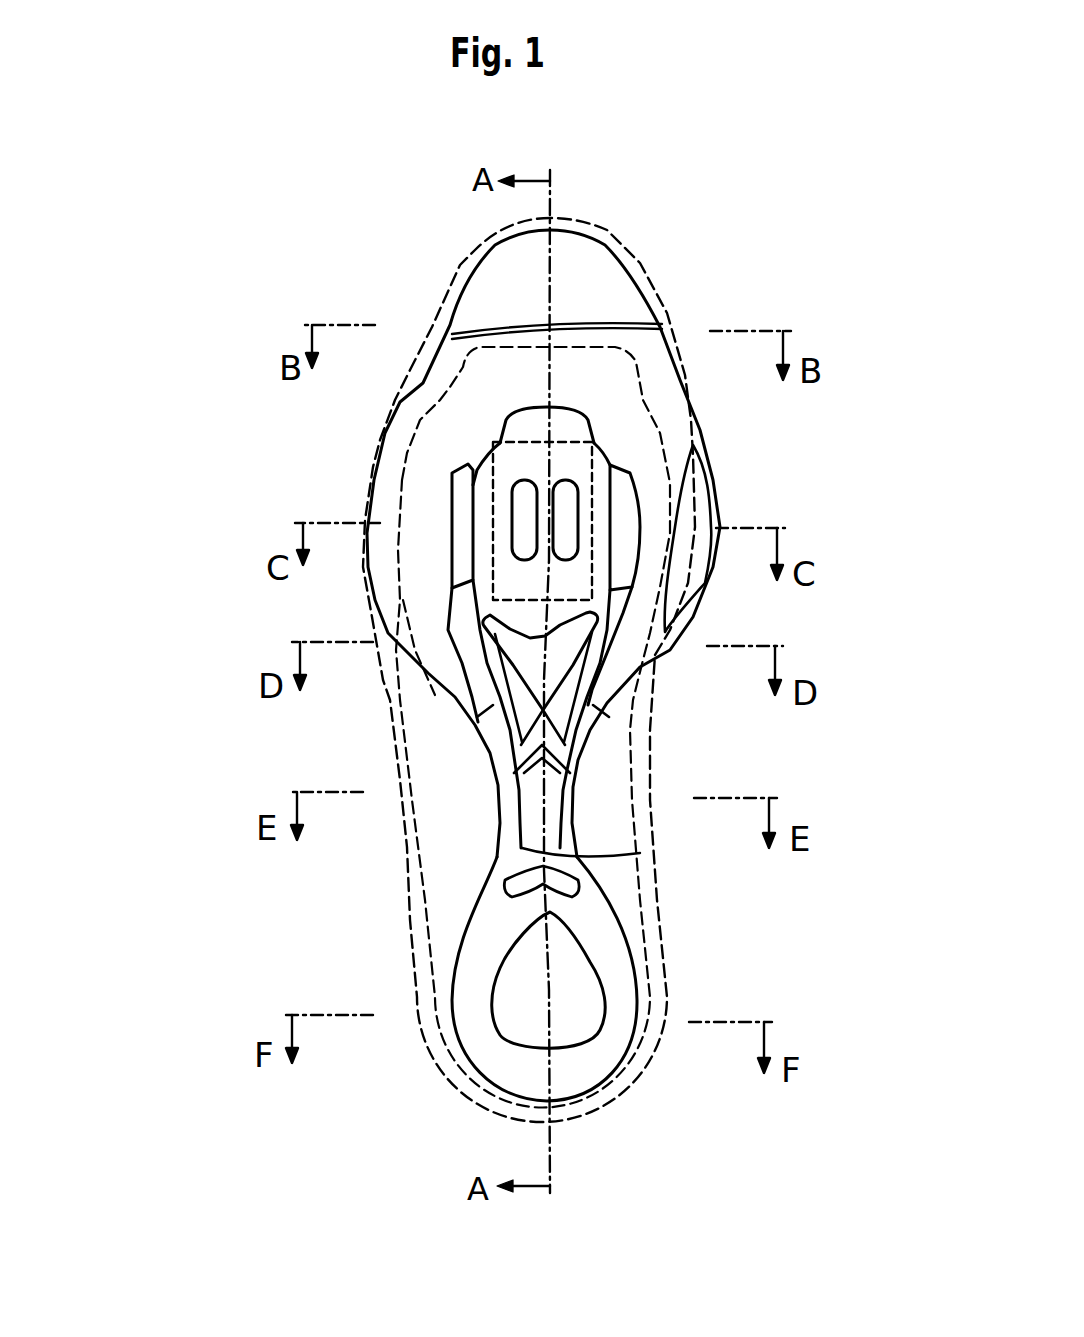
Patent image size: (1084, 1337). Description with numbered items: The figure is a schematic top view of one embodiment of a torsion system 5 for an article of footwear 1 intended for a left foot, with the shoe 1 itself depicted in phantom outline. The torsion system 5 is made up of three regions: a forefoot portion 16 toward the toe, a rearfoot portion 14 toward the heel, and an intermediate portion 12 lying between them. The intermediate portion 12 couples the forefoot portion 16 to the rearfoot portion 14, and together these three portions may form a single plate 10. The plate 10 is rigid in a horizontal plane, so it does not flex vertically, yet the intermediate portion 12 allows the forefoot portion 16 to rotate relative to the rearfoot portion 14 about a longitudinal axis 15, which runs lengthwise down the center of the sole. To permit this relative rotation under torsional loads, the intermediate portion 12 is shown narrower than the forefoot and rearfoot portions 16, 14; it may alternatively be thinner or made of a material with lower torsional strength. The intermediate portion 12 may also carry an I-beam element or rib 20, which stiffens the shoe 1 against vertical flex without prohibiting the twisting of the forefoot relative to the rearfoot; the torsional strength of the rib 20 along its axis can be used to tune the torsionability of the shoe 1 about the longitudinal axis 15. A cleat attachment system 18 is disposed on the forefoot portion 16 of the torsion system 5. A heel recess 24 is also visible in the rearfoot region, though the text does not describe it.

The article of footwear 1 is at (393, 850).
The torsion system 5 is at (425, 318).
The plate 10 is at (640, 667).
The intermediate portion 12 is at (511, 792).
The rearfoot portion 14 is at (477, 997).
The longitudinal axis 15 is at (553, 193).
The forefoot portion 16 is at (537, 353).
The cleat attachment system 18 is at (548, 520).
The I-beam element or rib 20 is at (640, 853).
The heel recess 24 is at (597, 1005).